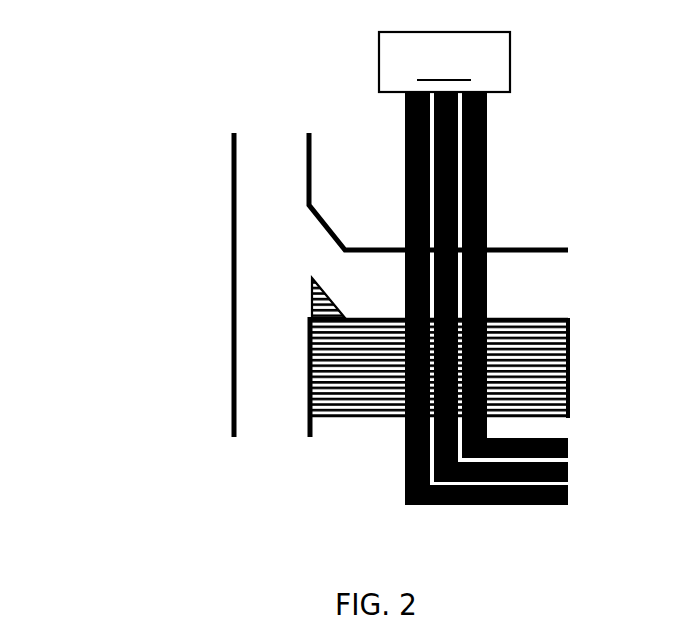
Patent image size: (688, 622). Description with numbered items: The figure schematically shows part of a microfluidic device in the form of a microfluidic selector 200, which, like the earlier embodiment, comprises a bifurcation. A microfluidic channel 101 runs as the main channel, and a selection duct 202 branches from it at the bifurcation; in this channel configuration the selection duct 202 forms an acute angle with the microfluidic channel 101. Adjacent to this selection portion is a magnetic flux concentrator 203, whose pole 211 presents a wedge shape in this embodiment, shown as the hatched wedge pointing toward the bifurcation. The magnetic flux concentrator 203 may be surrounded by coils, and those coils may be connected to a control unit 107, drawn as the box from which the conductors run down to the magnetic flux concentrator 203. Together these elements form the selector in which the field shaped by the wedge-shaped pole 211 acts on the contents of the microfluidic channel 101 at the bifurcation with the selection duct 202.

The microfluidic selector 200 is at (124, 72).
The microfluidic channel 101 is at (232, 185).
The selection duct 202 is at (346, 248).
The magnetic flux concentrator 203 is at (578, 380).
The pole 211 is at (313, 312).
The control unit 107 is at (473, 268).